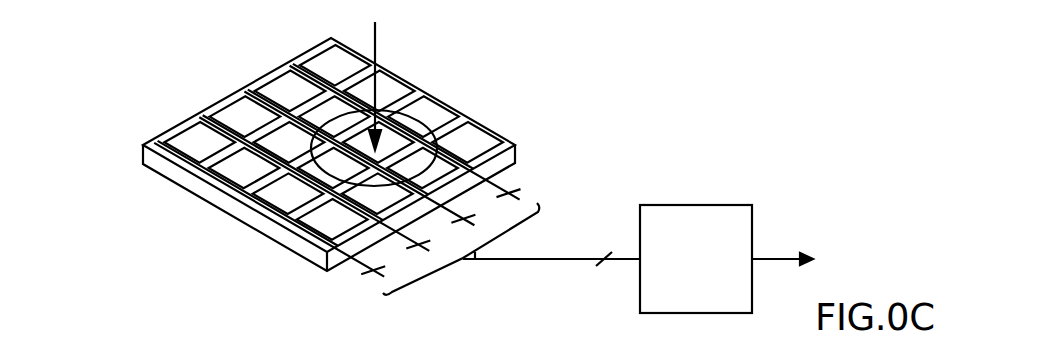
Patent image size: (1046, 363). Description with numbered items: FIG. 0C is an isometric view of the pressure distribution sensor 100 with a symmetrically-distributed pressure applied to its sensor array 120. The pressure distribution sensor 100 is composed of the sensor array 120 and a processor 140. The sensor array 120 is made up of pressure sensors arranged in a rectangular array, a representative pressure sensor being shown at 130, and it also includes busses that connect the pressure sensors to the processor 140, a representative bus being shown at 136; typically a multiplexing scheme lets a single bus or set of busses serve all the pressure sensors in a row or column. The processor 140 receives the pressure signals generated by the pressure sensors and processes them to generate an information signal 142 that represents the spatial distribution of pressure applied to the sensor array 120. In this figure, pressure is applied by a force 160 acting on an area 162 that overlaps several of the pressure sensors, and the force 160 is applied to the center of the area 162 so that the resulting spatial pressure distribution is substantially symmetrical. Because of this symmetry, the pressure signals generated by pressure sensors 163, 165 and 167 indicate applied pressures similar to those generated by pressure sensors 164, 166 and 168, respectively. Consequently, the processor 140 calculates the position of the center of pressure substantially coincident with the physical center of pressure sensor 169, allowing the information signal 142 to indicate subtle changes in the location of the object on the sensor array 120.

The pressure distribution sensor 100 is at (634, 161).
The sensor array 120 is at (183, 189).
The pressure sensor 130 is at (332, 56).
The bus 136 is at (370, 170).
The processor 140 is at (717, 293).
The information signal 142 is at (780, 258).
The force 160 is at (376, 23).
The area 162 is at (418, 120).
The pressure sensor 163 is at (310, 220).
The pressure sensor 164 is at (278, 132).
The pressure sensor 165 is at (480, 140).
The pressure sensor 166 is at (317, 113).
The pressure sensor 167 is at (472, 132).
The pressure sensor 168 is at (383, 89).
The pressure sensor 169 is at (264, 210).